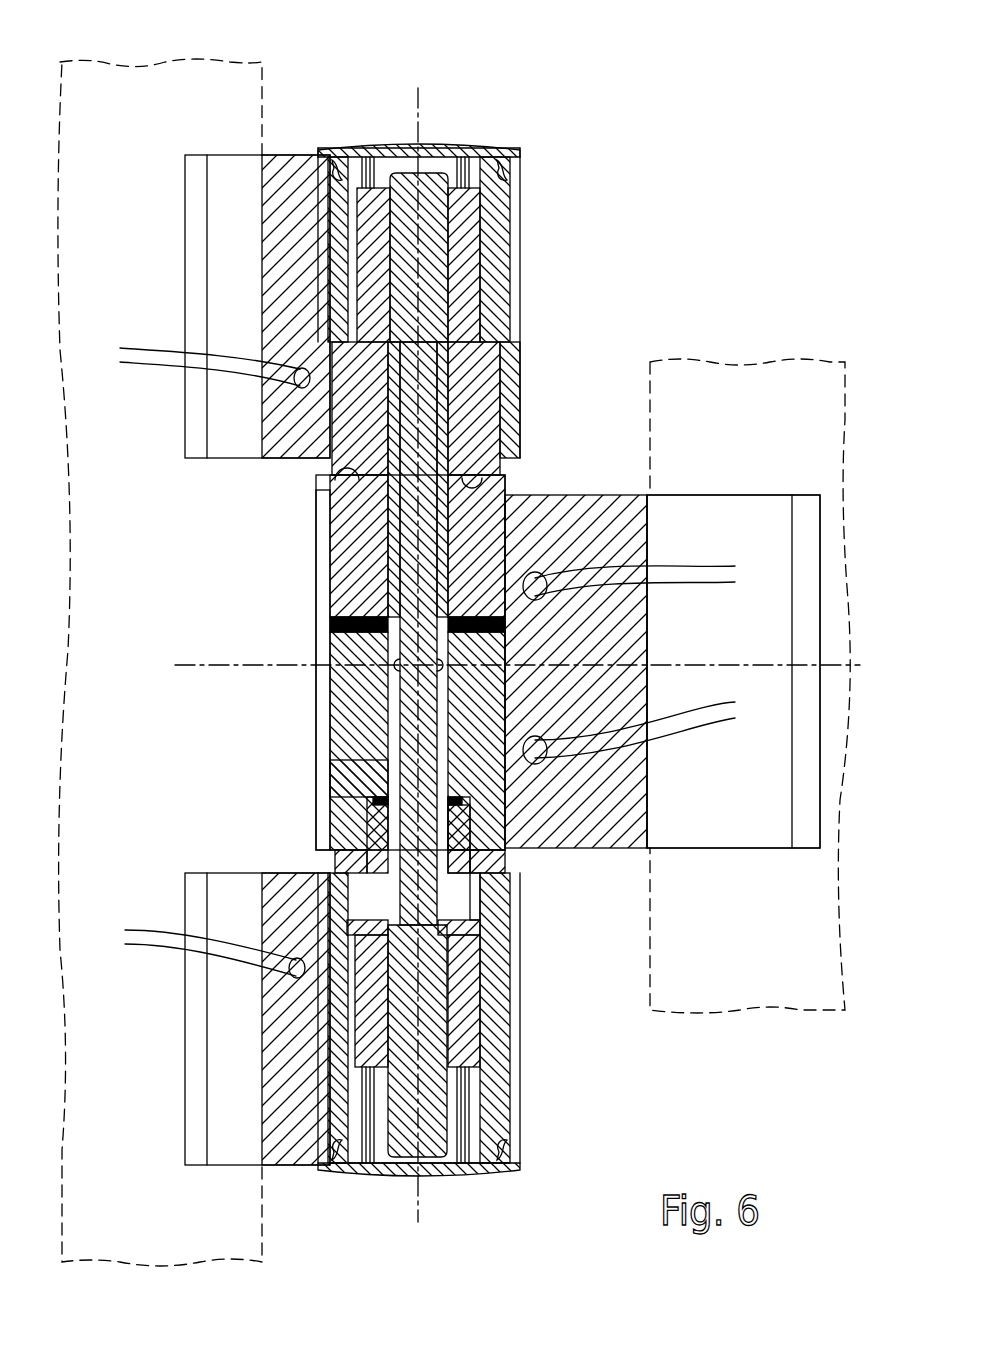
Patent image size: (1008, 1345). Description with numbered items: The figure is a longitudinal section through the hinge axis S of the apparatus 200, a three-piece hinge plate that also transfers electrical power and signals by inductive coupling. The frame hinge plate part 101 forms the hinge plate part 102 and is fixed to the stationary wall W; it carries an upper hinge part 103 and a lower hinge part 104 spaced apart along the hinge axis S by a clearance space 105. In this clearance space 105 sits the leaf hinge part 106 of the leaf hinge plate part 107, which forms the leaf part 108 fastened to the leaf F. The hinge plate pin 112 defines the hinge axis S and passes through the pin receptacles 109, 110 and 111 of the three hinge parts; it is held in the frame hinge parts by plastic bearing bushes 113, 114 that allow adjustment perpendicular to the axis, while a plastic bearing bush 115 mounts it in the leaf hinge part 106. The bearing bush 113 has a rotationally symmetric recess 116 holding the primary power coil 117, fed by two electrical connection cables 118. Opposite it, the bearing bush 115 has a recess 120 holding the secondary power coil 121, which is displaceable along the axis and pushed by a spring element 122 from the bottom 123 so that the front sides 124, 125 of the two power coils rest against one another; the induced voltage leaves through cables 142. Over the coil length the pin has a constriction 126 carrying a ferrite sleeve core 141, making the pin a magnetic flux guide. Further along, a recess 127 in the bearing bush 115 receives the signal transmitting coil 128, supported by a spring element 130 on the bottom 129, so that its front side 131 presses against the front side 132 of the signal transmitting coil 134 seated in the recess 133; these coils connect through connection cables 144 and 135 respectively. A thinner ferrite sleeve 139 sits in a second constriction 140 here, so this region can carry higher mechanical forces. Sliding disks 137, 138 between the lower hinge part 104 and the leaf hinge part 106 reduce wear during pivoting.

The stationary wall W is at (162, 95).
The leaf F is at (745, 365).
The hinge axis S is at (415, 97).
The frame hinge plate part 101 is at (117, 222).
The hinge plate part 102 is at (122, 1045).
The upper hinge part 103 is at (500, 190).
The lower hinge part 104 is at (505, 1165).
The clearance space 105 is at (482, 664).
The leaf hinge part 106 is at (298, 722).
The leaf hinge plate part 107 is at (690, 470).
The leaf part 108 is at (733, 671).
The pin receptacle 109 is at (477, 150).
The pin receptacle 110 is at (322, 497).
The pin receptacle 111 is at (352, 1160).
The hinge plate pin 112 is at (430, 215).
The bearing bush 113 is at (495, 245).
The bearing bush 114 is at (495, 1100).
The bearing bush 115 is at (345, 783).
The recess 116 is at (492, 345).
The primary power coil 117 is at (470, 400).
The electrical connection cables 118 is at (125, 348).
The recess 120 is at (505, 484).
The secondary power coil 121 is at (358, 568).
The spring element 122 is at (338, 612).
The bottom 123 is at (345, 650).
The front side 124 is at (475, 478).
The front side 125 is at (345, 462).
The constriction 126 is at (440, 335).
The recess 127 is at (462, 820).
The signal transmitting coil 128 is at (367, 835).
The bottom 129 is at (370, 800).
The spring element 130 is at (470, 797).
The front side 131 is at (345, 860).
The front side 132 is at (478, 917).
The recess 133 is at (440, 935).
The signal transmitting coil 134 is at (455, 932).
The connection cables 135 is at (130, 930).
The sliding disk 137 is at (495, 862).
The sliding disk 138 is at (488, 875).
The sleeve 139 is at (462, 850).
The constriction 140 is at (455, 955).
The sleeve core 141 is at (455, 375).
The cables 142 is at (713, 578).
The connection cables 144 is at (735, 740).
The apparatus 200 is at (742, 160).